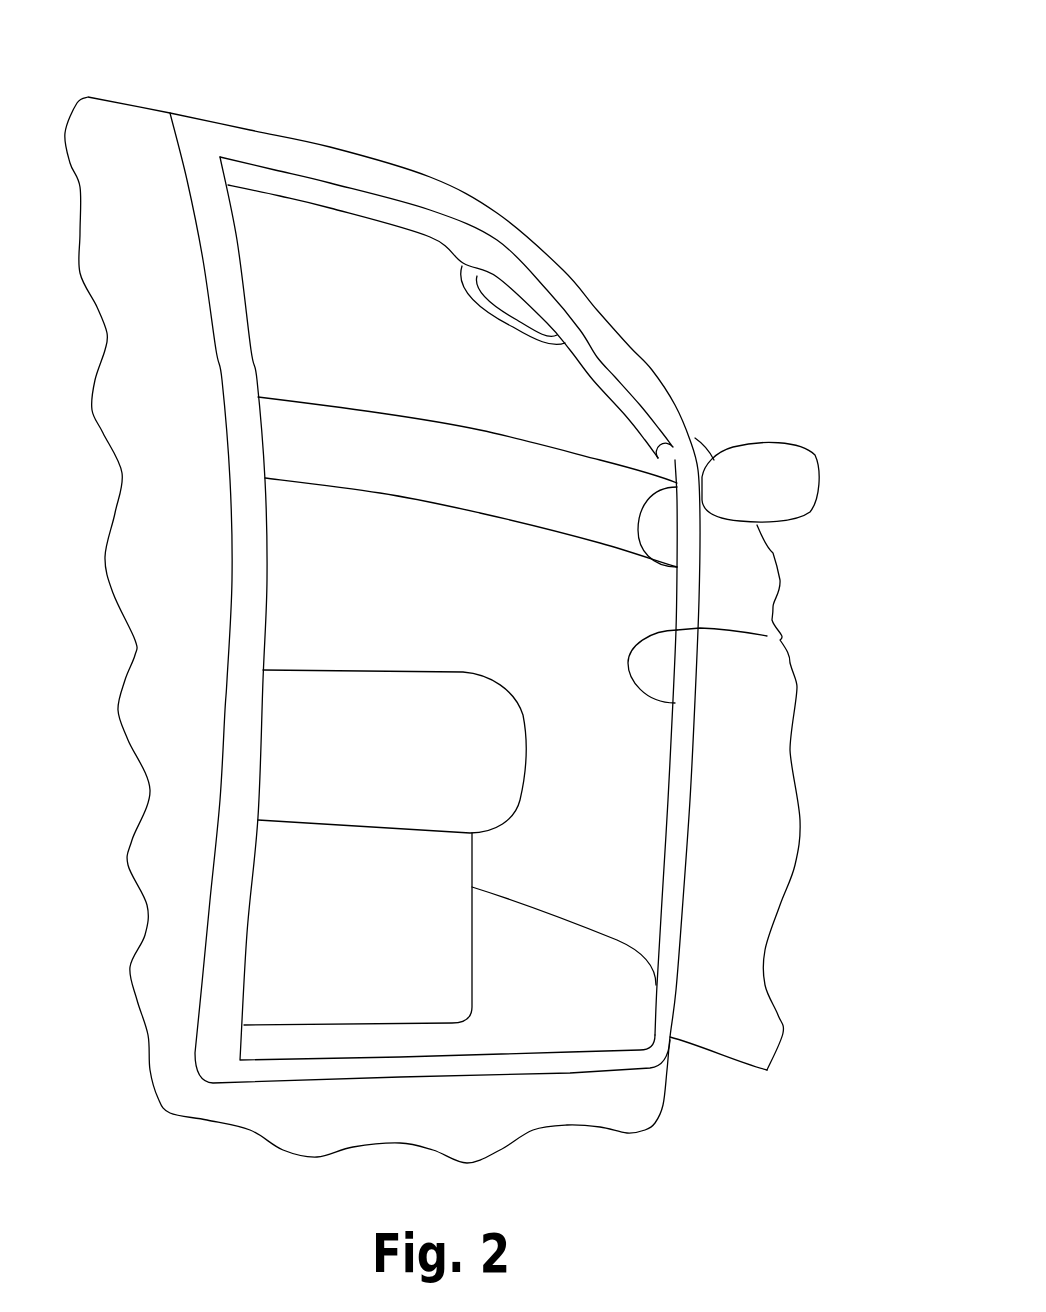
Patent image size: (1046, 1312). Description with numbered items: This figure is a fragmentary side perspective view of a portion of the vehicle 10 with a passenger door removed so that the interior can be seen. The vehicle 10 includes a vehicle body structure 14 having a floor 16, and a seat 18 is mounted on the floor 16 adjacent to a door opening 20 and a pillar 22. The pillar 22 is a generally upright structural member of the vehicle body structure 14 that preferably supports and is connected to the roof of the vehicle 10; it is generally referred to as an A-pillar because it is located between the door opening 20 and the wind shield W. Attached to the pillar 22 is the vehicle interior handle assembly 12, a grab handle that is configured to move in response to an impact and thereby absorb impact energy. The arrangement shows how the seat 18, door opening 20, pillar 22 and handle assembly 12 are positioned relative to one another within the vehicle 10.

The vehicle 10 is at (613, 242).
The vehicle interior handle assembly 12 is at (545, 364).
The vehicle body structure 14 is at (62, 175).
The floor 16 is at (547, 1033).
The seat 18 is at (512, 753).
The door opening 20 is at (773, 637).
The pillar 22 is at (612, 348).
The wind shield W is at (435, 357).